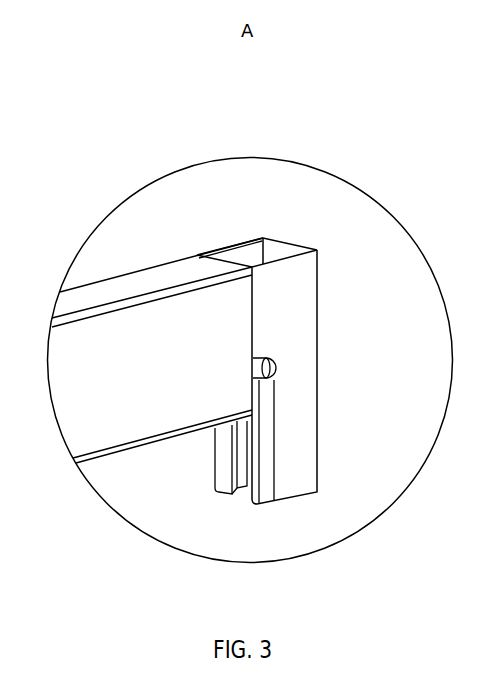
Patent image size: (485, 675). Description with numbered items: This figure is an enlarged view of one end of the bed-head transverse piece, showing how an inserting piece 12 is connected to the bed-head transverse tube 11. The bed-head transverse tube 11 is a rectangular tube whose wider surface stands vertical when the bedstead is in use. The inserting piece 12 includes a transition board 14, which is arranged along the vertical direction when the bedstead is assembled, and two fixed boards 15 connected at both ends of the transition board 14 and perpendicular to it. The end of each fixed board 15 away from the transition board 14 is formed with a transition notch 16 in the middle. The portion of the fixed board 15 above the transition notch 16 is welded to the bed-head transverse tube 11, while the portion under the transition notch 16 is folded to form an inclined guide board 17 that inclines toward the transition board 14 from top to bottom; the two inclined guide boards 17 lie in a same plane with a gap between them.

The bed-head transverse tube 11 is at (142, 338).
The inserting piece 12 is at (332, 277).
The transition board 14 is at (303, 240).
The fixed board 15 is at (237, 243).
The transition notch 16 is at (280, 362).
The inclined guide board 17 is at (257, 492).